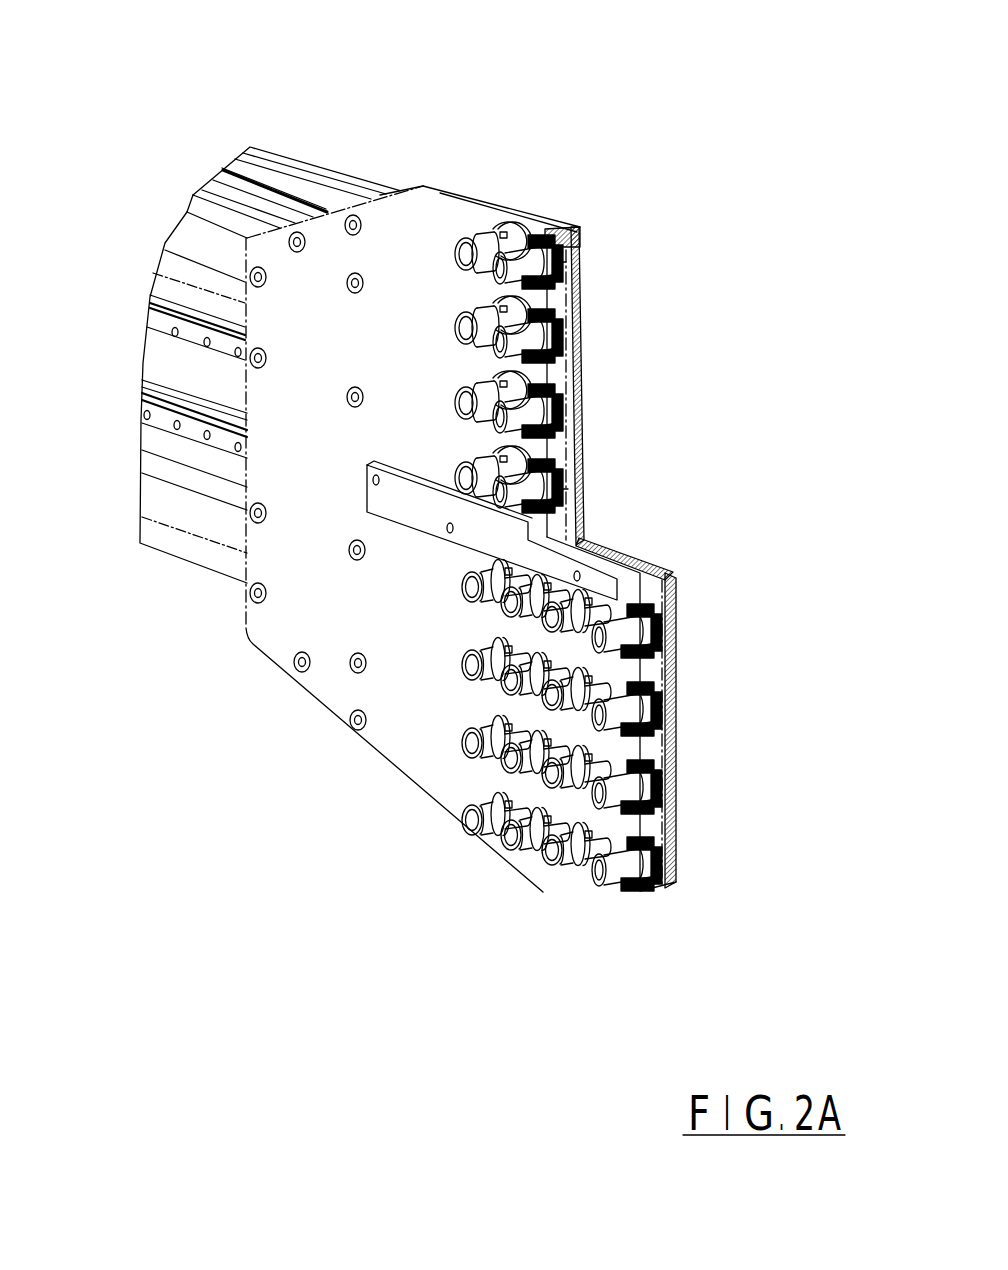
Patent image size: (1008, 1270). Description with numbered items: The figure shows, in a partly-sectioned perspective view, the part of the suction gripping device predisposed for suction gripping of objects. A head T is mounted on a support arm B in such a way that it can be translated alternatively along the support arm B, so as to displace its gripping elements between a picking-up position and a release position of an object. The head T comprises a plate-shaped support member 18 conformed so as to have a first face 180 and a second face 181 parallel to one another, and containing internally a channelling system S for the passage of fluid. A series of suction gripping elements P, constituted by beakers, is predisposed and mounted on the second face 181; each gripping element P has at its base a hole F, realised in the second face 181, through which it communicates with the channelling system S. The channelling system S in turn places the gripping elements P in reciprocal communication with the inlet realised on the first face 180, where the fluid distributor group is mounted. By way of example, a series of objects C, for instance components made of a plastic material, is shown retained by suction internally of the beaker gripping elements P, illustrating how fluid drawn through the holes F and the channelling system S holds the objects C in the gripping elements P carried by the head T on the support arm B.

The plate-shaped support member 18 is at (502, 198).
The first face 180 is at (676, 643).
The second face 181 is at (428, 772).
The support arm B is at (160, 358).
The objects C is at (457, 400).
The suction gripping element P is at (530, 230).
The hole F is at (560, 262).
The channelling system S is at (577, 315).
The head T is at (438, 223).